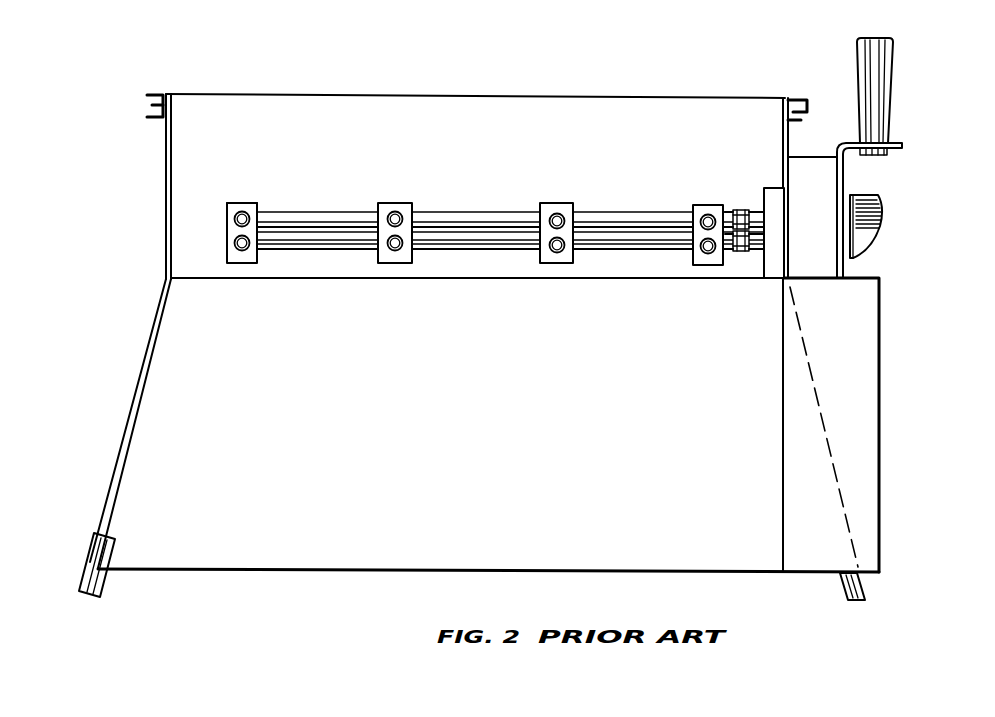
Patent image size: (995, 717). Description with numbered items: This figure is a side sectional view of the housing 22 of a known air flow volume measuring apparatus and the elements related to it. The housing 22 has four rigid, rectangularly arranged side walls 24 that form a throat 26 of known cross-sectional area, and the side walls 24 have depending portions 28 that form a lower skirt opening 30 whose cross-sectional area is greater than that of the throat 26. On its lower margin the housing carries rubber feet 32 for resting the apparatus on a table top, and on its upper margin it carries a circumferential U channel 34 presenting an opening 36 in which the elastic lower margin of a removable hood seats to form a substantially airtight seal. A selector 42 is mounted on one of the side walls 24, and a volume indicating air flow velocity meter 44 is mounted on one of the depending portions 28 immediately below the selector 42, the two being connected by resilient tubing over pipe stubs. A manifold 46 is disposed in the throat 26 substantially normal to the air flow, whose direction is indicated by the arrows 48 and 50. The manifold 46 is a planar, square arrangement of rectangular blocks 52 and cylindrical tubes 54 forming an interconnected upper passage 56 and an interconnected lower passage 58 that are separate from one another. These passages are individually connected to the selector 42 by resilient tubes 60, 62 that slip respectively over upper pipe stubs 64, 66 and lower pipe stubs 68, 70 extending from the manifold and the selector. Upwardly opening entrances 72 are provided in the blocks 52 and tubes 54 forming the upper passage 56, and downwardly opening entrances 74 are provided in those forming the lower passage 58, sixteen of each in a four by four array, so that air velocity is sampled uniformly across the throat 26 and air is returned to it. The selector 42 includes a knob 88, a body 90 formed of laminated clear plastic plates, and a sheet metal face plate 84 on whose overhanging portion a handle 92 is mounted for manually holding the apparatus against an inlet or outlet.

The housing 22 is at (110, 442).
The side walls 24 is at (165, 222).
The throat 26 is at (322, 122).
The depending portions 28 is at (112, 494).
The lower skirt opening 30 is at (452, 552).
The rubber feet 32 is at (118, 585).
The U channel 34 is at (150, 93).
The opening 36 is at (145, 105).
The selector 42 is at (866, 180).
The volume indicating air flow velocity meter 44 is at (884, 350).
The manifold 46 is at (240, 193).
The arrows 48 is at (553, 150).
The arrows 50 is at (553, 412).
The rectangular blocks 52 is at (232, 203).
The cylindrical tubes 54 is at (320, 212).
The upper passage 56 is at (235, 216).
The lower passage 58 is at (234, 242).
The resilient tube 60 is at (742, 212).
The resilient tube 62 is at (742, 252).
The upper pipe stub 64 is at (736, 210).
The upper pipe stub 66 is at (751, 212).
The lower pipe stub 68 is at (736, 252).
The lower pipe stub 70 is at (750, 253).
The upwardly opening entrances 72 is at (245, 213).
The downwardly opening entrances 74 is at (243, 250).
The plate 84 is at (845, 165).
The knob 88 is at (870, 250).
The body 90 is at (812, 180).
The handle 92 is at (878, 38).